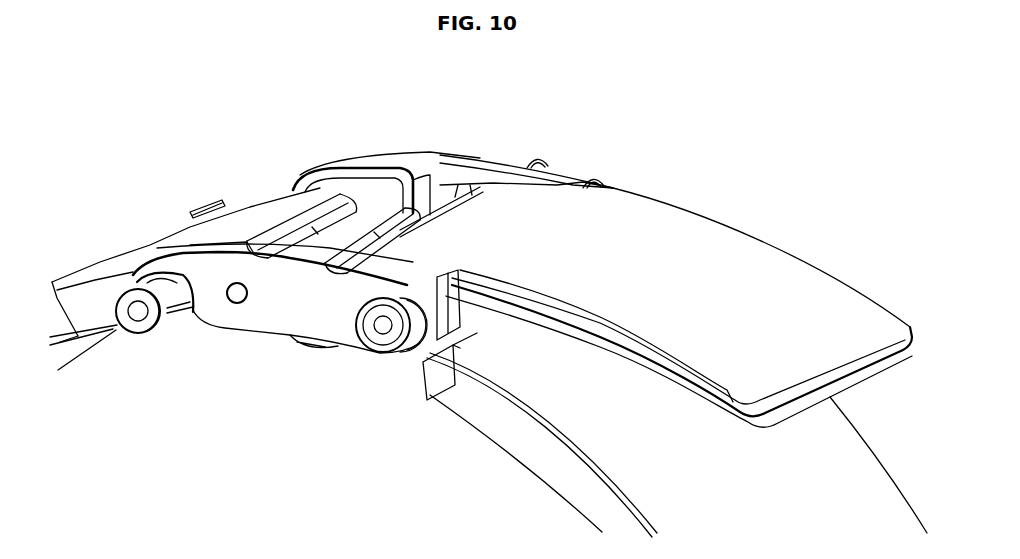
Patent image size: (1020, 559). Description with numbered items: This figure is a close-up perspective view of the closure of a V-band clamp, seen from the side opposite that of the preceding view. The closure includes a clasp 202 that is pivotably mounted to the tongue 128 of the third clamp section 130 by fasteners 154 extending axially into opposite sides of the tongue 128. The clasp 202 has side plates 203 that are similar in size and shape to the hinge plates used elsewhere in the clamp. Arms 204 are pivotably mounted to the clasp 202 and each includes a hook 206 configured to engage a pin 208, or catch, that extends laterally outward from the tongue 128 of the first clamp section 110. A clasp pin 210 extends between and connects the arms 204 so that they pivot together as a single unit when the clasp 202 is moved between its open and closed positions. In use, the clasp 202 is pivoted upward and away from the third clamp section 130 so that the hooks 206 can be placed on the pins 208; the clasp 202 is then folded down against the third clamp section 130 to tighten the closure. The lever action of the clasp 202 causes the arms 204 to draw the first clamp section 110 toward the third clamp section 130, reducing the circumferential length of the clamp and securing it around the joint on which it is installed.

The first clamp section 110 is at (108, 258).
The tongue 128 is at (233, 230).
The third clamp section 130 is at (838, 472).
The fastener 154 is at (307, 340).
The clasp 202 is at (714, 290).
The side plate 203 is at (422, 282).
The arm 204 is at (270, 302).
The hook 206 is at (155, 267).
The pin 208 is at (139, 327).
The clasp pin 210 is at (364, 217).